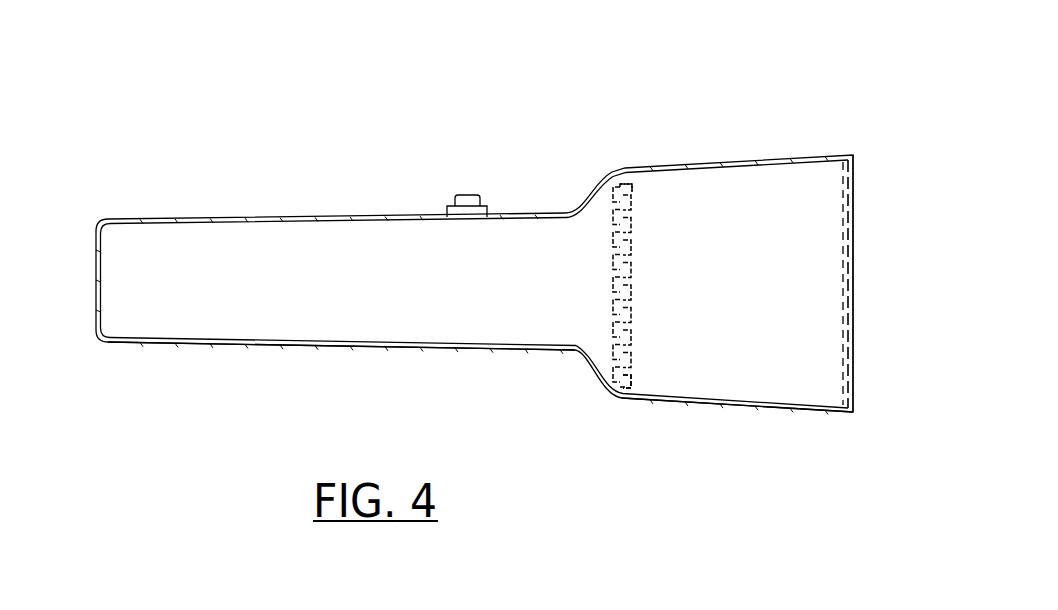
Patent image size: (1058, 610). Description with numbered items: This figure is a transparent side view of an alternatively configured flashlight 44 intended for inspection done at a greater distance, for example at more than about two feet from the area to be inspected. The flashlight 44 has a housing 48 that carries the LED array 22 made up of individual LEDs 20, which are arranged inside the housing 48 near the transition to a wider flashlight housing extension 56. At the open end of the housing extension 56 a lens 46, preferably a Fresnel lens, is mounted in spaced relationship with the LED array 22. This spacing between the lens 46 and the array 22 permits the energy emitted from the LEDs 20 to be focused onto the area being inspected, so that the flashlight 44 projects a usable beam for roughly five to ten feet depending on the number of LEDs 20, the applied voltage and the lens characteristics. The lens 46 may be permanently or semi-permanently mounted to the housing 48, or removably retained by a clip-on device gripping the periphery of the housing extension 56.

The flashlight 44 is at (388, 173).
The lens 46 is at (853, 194).
The housing 48 is at (392, 350).
The flashlight housing extension 56 is at (742, 411).
The LED array 22 is at (613, 219).
The LEDs 20 is at (632, 192).